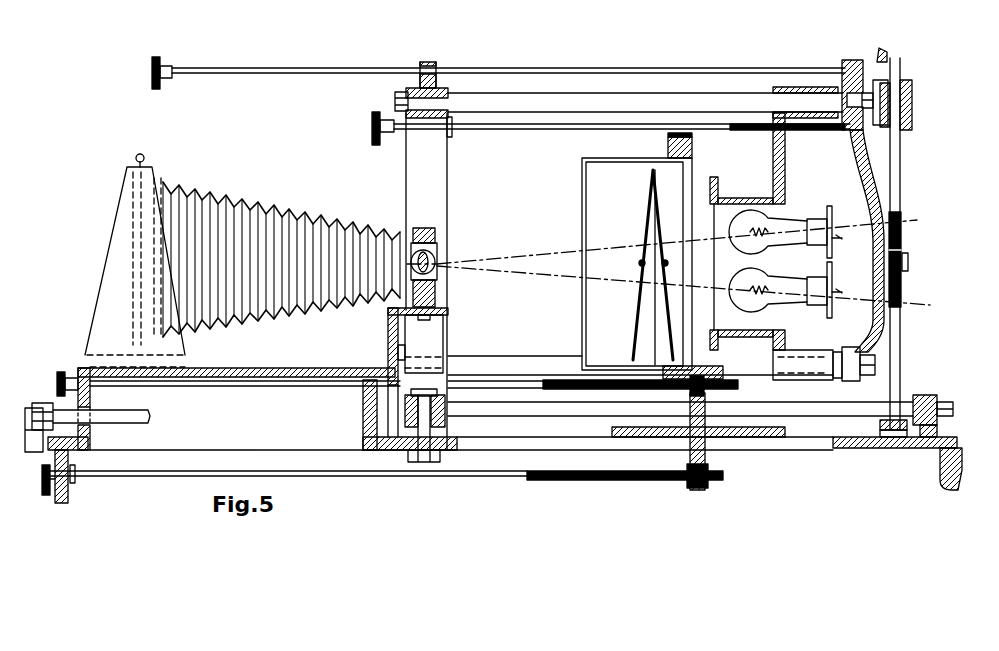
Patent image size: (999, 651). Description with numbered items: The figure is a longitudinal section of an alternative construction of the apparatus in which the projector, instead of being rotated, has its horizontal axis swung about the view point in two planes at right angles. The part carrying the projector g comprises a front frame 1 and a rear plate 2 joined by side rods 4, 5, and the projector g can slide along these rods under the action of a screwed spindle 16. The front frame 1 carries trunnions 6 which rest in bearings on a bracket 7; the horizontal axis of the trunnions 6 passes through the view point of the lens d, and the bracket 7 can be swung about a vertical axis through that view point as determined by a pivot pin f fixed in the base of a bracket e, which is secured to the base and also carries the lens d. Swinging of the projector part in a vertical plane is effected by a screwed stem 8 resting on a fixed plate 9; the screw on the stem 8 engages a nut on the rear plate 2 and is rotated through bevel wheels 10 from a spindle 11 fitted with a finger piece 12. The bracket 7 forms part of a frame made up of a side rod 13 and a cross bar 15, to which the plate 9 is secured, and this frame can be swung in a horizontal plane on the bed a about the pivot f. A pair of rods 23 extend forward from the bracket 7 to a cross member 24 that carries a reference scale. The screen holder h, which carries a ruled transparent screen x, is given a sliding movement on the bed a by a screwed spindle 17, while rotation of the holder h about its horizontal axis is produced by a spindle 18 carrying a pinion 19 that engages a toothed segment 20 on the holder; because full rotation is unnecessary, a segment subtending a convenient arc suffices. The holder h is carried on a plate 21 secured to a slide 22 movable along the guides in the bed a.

The front frame 1 is at (449, 176).
The rear plate 2 is at (861, 153).
The side rod 4 is at (550, 113).
The side rod 5 is at (527, 356).
The trunnions 6 is at (437, 280).
The bracket 7 is at (445, 330).
The screwed stem 8 is at (901, 188).
The fixed plate 9 is at (890, 438).
The bevel wheels 10 is at (903, 80).
The spindle 11 is at (622, 70).
The finger piece 12 is at (155, 65).
The side rod 13 is at (517, 418).
The cross bar 15 is at (931, 396).
The screwed spindle 16 is at (476, 129).
The screwed spindle 17 is at (515, 479).
The spindle 18 is at (217, 387).
The pinion 19 is at (668, 392).
The toothed segment 20 is at (683, 365).
The plate 21 is at (693, 153).
The slide 22 is at (712, 437).
The rods 23 is at (148, 420).
The cross member 24 is at (33, 450).
The bed a is at (850, 441).
The lens d is at (434, 259).
The bracket e is at (390, 414).
The pivot pin f is at (417, 451).
The projector g is at (758, 198).
The screen holder h is at (615, 158).
The transparent screen x is at (655, 232).